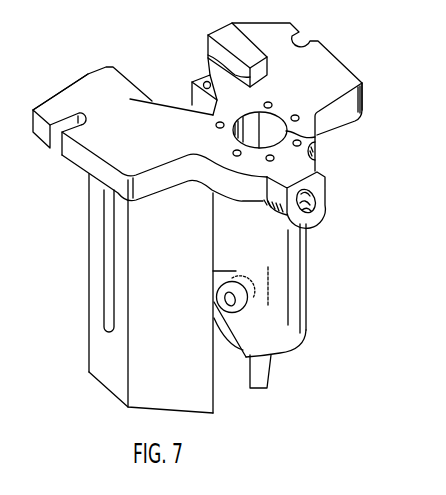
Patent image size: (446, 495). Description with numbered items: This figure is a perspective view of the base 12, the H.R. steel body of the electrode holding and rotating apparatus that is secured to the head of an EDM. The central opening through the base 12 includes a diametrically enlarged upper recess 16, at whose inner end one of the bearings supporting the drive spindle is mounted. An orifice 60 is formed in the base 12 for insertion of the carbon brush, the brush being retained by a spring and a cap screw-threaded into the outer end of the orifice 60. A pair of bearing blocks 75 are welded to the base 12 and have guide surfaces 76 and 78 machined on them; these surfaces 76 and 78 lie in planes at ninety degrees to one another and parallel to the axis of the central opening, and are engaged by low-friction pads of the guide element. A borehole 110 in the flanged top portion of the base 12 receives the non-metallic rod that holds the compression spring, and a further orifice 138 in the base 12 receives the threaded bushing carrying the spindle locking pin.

The base 12 is at (220, 218).
The upper recess 16 is at (316, 136).
The orifice 60 is at (313, 203).
The bearing blocks 75 is at (161, 104).
The guide surface 76 is at (208, 57).
The guide surface 78 is at (182, 103).
The borehole 110 is at (207, 82).
The orifice 138 is at (228, 304).